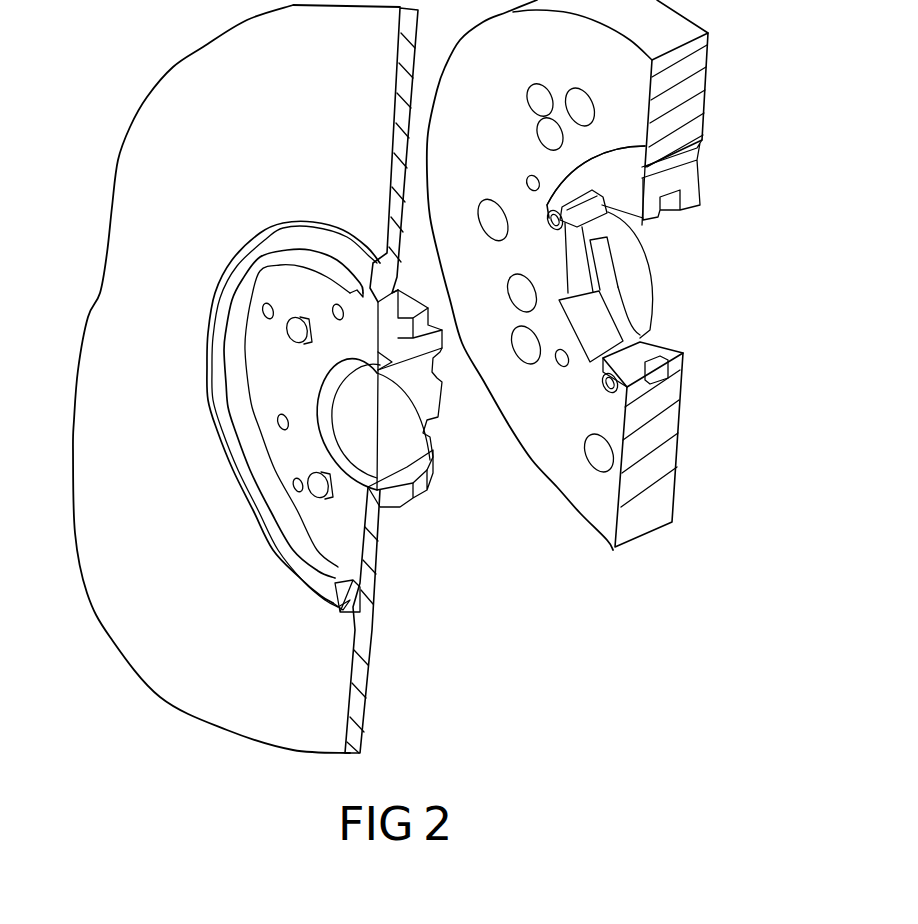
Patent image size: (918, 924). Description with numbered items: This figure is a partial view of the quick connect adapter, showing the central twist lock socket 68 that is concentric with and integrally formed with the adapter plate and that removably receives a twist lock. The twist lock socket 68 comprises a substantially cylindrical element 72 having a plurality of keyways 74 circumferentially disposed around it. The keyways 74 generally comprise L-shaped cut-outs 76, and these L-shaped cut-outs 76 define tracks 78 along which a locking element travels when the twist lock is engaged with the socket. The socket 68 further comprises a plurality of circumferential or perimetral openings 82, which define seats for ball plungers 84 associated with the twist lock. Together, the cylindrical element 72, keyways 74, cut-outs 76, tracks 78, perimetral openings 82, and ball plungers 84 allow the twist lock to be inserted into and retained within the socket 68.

The twist lock socket 68 is at (729, 357).
The substantially cylindrical element 72 is at (663, 187).
The keyways 74 is at (588, 215).
The L-shaped cut-outs 76 is at (627, 340).
The tracks 78 is at (597, 338).
The perimetral openings 82 is at (645, 146).
The ball plungers 84 is at (292, 333).